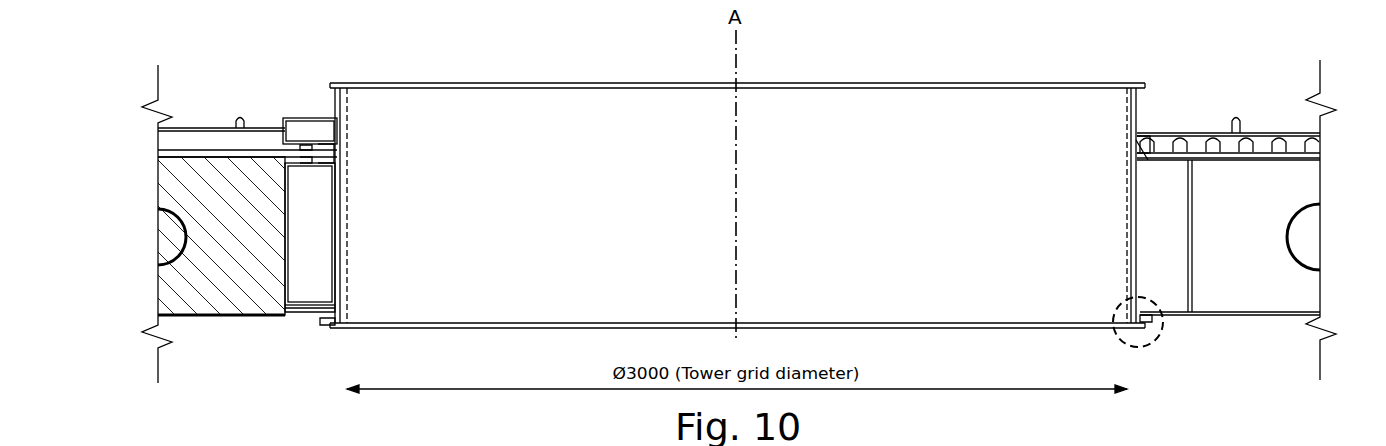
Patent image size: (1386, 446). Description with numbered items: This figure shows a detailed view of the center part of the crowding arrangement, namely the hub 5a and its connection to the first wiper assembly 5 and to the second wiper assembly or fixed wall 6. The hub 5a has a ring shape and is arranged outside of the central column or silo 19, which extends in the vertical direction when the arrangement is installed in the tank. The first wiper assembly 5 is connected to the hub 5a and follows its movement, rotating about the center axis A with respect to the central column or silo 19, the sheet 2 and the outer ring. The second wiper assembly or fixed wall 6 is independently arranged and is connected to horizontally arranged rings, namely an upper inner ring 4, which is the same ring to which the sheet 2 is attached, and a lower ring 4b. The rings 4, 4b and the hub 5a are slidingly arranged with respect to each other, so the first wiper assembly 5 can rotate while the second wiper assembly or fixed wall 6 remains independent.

The sheet 2 is at (165, 165).
The inner ring 4 is at (322, 153).
The lower ring 4b is at (1150, 338).
The first wiper assembly 5 is at (255, 318).
The hub 5a is at (333, 105).
The second wiper assembly or fixed wall 6 is at (1255, 318).
The central column or silo 19 is at (893, 83).